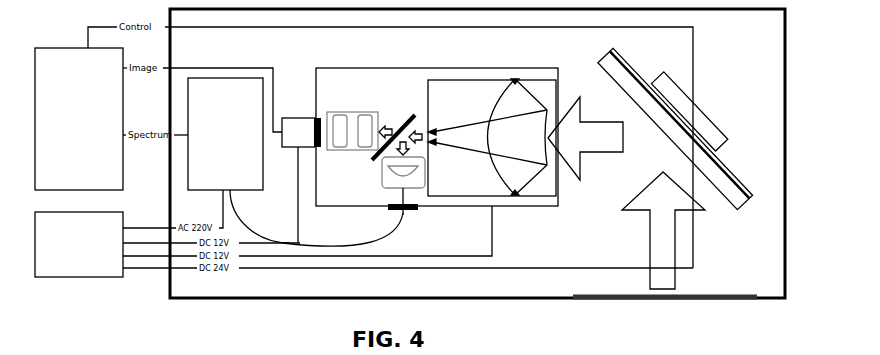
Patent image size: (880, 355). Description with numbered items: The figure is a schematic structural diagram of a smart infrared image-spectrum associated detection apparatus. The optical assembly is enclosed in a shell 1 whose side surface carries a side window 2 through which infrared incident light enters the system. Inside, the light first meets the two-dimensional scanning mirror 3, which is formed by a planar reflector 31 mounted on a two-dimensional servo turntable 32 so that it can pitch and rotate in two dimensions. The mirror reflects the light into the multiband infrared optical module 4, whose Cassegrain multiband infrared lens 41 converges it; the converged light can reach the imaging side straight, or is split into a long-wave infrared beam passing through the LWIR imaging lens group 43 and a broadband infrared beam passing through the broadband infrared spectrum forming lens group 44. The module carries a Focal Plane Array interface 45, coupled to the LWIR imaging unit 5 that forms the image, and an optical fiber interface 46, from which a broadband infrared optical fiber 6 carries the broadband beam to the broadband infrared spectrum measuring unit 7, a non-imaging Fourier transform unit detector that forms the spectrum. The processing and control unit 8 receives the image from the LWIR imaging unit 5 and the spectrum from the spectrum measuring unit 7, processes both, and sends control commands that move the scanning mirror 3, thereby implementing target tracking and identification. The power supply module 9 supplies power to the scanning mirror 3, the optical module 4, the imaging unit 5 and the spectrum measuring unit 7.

The shell 1 is at (477, 153).
The window 2 is at (665, 289).
The two-dimensional scanning mirror 3 is at (675, 128).
The planar reflector 31 is at (675, 128).
The two-dimensional servo turntable 32 is at (689, 111).
The multiband infrared optical module 4 is at (437, 144).
The Cassegrain multiband infrared lens 41 is at (492, 137).
The LWIR imaging lens group 43 is at (393, 132).
The broadband infrared spectrum forming lens group 44 is at (397, 172).
The Focal Plane Array (FPA) interface 45 is at (352, 124).
The optical fiber interface 46 is at (405, 204).
The LWIR imaging unit 5 is at (301, 174).
The broadband infrared optical fiber 6 is at (316, 218).
The broadband infrared spectrum measuring unit 7 is at (225, 134).
The processing and control unit 8 is at (79, 119).
The power supply module 9 is at (79, 244).